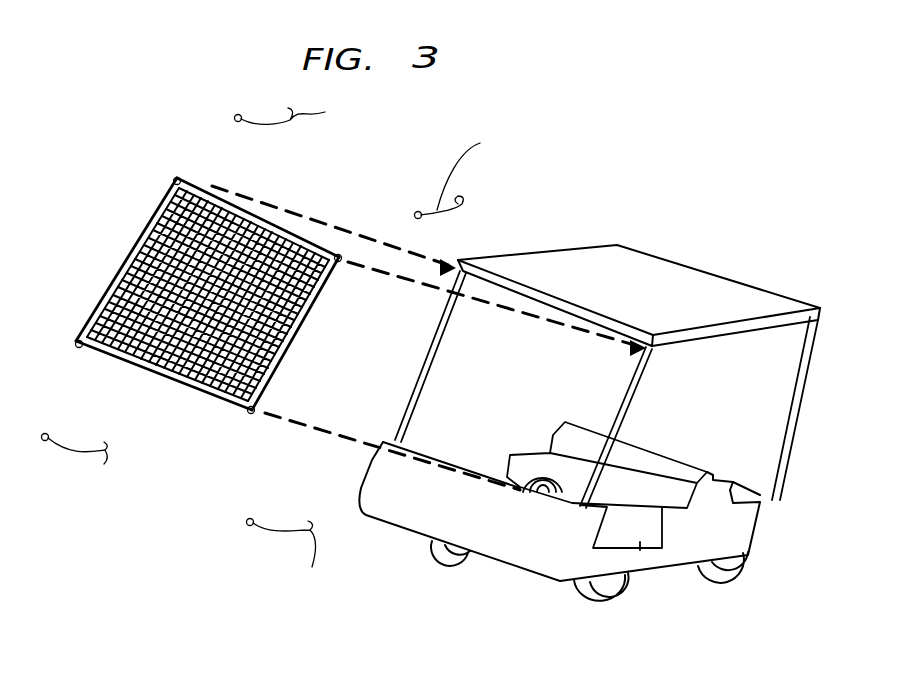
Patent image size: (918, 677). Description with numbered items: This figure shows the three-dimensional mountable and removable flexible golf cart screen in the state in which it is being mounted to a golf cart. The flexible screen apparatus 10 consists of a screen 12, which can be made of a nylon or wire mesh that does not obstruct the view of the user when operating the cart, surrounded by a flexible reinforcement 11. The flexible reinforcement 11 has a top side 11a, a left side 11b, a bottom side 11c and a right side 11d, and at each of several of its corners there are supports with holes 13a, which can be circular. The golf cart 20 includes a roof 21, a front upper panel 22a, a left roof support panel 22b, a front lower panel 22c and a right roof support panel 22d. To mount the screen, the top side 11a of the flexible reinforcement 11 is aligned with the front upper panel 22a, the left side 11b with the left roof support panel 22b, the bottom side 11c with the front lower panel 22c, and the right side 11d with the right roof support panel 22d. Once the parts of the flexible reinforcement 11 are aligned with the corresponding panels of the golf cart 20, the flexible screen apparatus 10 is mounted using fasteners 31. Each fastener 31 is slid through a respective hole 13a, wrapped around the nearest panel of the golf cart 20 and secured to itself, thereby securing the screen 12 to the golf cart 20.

The flexible screen apparatus 10 is at (213, 297).
The flexible reinforcement 11 is at (228, 280).
The top side 11a is at (214, 190).
The left side 11b is at (132, 258).
The bottom side 11c is at (182, 388).
The right side 11d is at (322, 304).
The screen 12 is at (112, 291).
The holes 13a is at (177, 180).
The golf cart 20 is at (585, 404).
The roof 21 is at (595, 313).
The front upper panel 22a is at (545, 297).
The left roof support panel 22b is at (430, 353).
The front lower panel 22c is at (478, 489).
The right roof support panel 22d is at (630, 405).
The fasteners 31 is at (278, 351).